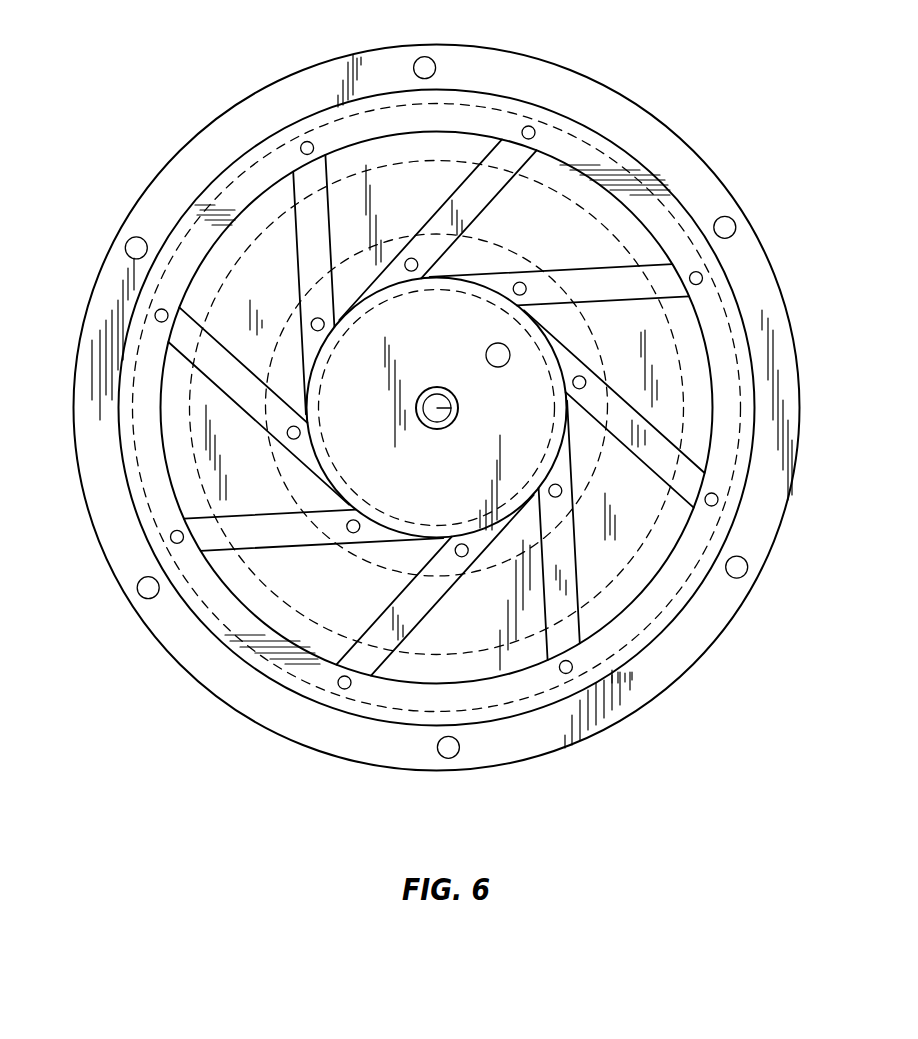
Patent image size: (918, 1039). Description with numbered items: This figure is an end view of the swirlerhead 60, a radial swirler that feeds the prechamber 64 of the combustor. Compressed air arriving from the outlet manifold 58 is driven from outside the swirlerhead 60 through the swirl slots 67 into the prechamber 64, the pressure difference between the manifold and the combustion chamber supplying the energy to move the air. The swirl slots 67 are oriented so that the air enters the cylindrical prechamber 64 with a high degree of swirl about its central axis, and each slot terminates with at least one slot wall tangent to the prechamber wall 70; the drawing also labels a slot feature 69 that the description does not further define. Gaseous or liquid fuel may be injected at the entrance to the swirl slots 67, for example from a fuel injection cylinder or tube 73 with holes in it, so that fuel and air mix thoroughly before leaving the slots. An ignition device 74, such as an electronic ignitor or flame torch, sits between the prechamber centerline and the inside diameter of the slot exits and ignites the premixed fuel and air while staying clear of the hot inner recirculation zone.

The outlet manifold 58 is at (667, 623).
The swirlerhead 60 is at (278, 105).
The prechamber 64 is at (367, 315).
The swirl slots 67 is at (505, 407).
The blade 69 is at (499, 282).
The prechamber wall 70 is at (404, 283).
The fuel injection cylinder or tube 73 is at (168, 536).
The ignition device 74 is at (504, 366).